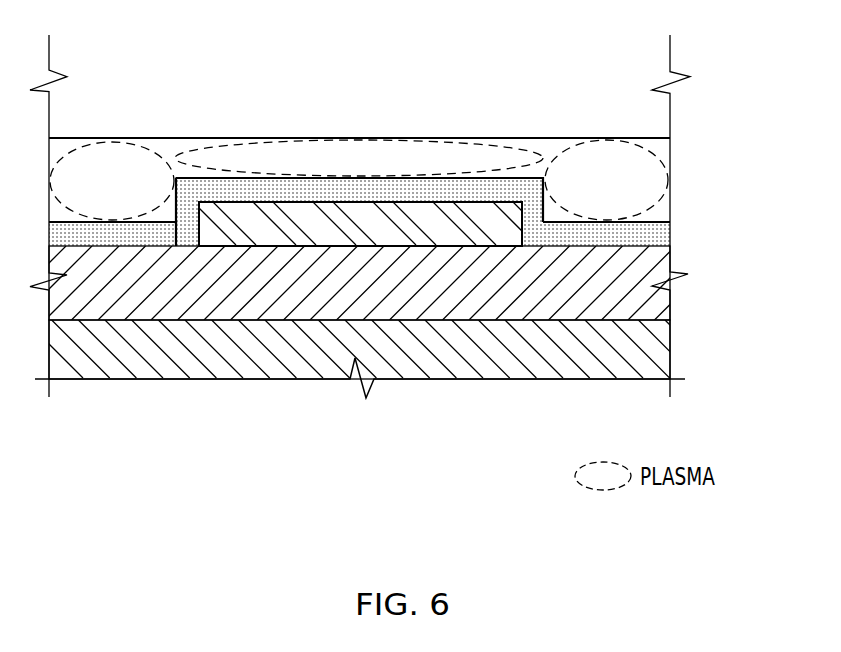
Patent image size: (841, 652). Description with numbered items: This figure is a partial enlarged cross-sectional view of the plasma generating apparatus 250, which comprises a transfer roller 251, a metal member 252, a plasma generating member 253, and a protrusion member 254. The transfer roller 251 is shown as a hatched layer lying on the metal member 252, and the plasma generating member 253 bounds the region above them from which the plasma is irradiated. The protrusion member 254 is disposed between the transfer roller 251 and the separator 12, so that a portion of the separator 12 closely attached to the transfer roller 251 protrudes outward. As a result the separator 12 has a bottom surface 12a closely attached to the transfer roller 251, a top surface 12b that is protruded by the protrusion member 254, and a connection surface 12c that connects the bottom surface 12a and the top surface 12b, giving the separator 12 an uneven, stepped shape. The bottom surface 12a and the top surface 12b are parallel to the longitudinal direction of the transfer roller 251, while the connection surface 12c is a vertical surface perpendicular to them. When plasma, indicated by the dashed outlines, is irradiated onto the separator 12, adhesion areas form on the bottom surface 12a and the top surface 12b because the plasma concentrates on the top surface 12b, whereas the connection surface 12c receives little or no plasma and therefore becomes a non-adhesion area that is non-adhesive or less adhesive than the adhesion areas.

The separator 12 is at (359, 135).
The bottom surface 12a is at (118, 233).
The top surface 12b is at (359, 145).
The connection surface 12c is at (174, 205).
The plasma generating apparatus 250 is at (407, 202).
The transfer roller 251 is at (662, 262).
The metal member 252 is at (387, 349).
The plasma generating member 253 is at (660, 111).
The protrusion member 254 is at (503, 219).